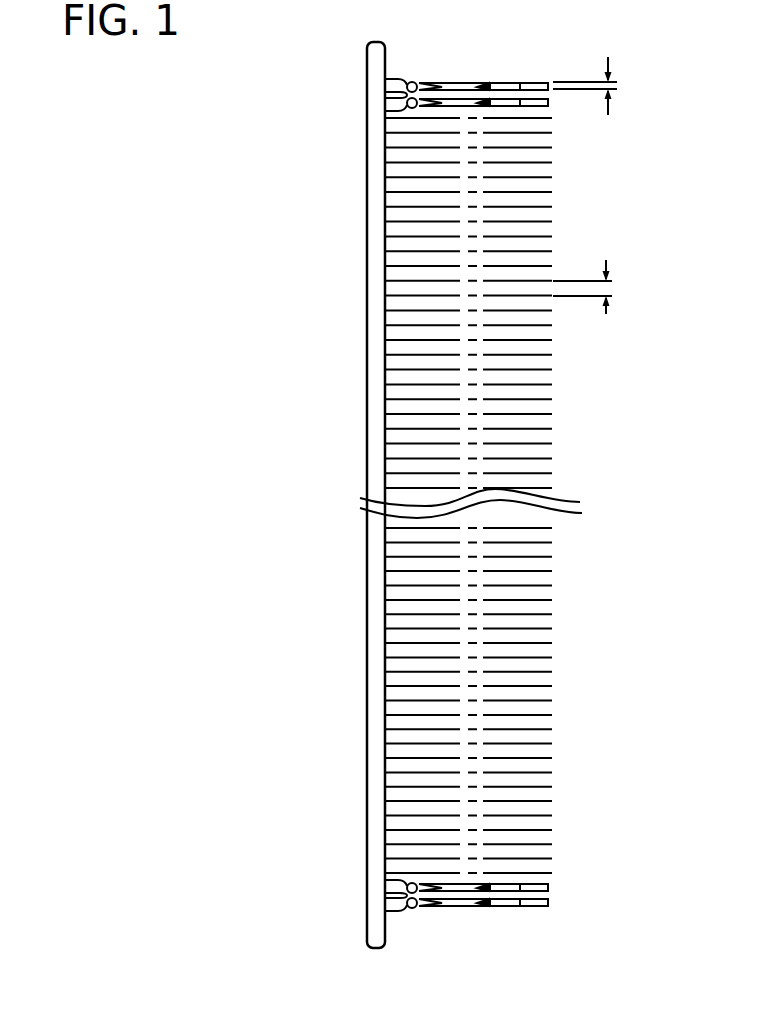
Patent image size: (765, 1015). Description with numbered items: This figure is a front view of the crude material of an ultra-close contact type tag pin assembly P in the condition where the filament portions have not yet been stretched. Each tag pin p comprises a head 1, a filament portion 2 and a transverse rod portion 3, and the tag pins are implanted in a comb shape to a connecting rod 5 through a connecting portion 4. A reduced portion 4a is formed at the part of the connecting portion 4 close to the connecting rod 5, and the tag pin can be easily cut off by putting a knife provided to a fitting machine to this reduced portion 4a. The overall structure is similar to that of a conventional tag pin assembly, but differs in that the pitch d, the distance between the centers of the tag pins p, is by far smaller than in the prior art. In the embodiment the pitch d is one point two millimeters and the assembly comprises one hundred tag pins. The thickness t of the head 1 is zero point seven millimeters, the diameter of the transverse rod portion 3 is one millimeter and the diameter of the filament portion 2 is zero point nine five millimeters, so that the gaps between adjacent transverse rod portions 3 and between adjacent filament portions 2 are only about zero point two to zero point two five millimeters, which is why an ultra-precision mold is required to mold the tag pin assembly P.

The head 1 is at (521, 908).
The filament portion 2 is at (464, 908).
The transverse rod portion 3 is at (416, 912).
The connecting portion 4 is at (389, 912).
The reduced portion 4a is at (406, 879).
The connecting rod 5 is at (372, 928).
The tag pin assembly P is at (686, 771).
The tag pin p is at (548, 903).
The thickness t is at (626, 89).
The pitch d is at (627, 287).